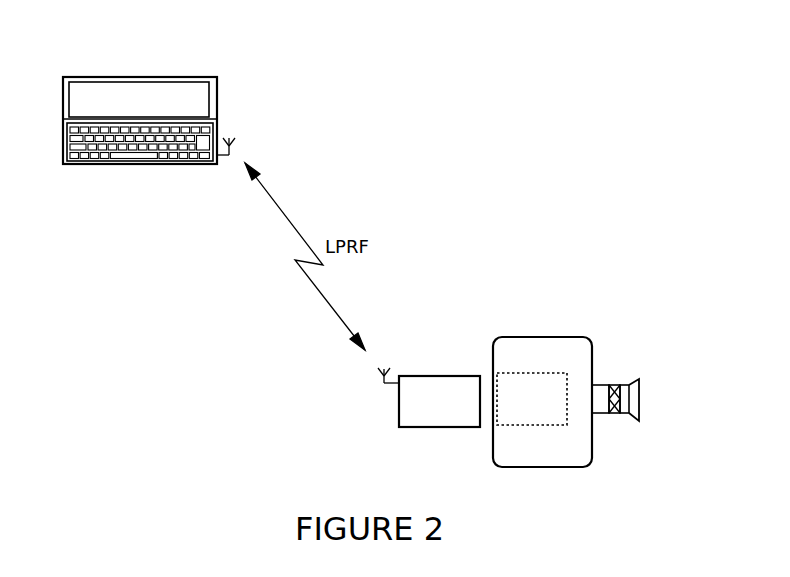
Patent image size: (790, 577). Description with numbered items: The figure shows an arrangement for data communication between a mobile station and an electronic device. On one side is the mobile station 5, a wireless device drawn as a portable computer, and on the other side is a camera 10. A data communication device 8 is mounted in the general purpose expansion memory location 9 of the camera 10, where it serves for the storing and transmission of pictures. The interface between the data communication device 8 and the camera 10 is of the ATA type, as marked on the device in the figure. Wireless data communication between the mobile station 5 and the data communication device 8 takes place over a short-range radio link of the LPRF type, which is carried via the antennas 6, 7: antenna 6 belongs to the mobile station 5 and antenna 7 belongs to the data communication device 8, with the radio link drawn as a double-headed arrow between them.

The mobile station 5 is at (64, 77).
The antenna 6 is at (240, 141).
The antenna 7 is at (376, 369).
The data communication device 8 is at (422, 376).
The general purpose expansion memory location 9 is at (492, 421).
The camera 10 is at (574, 337).